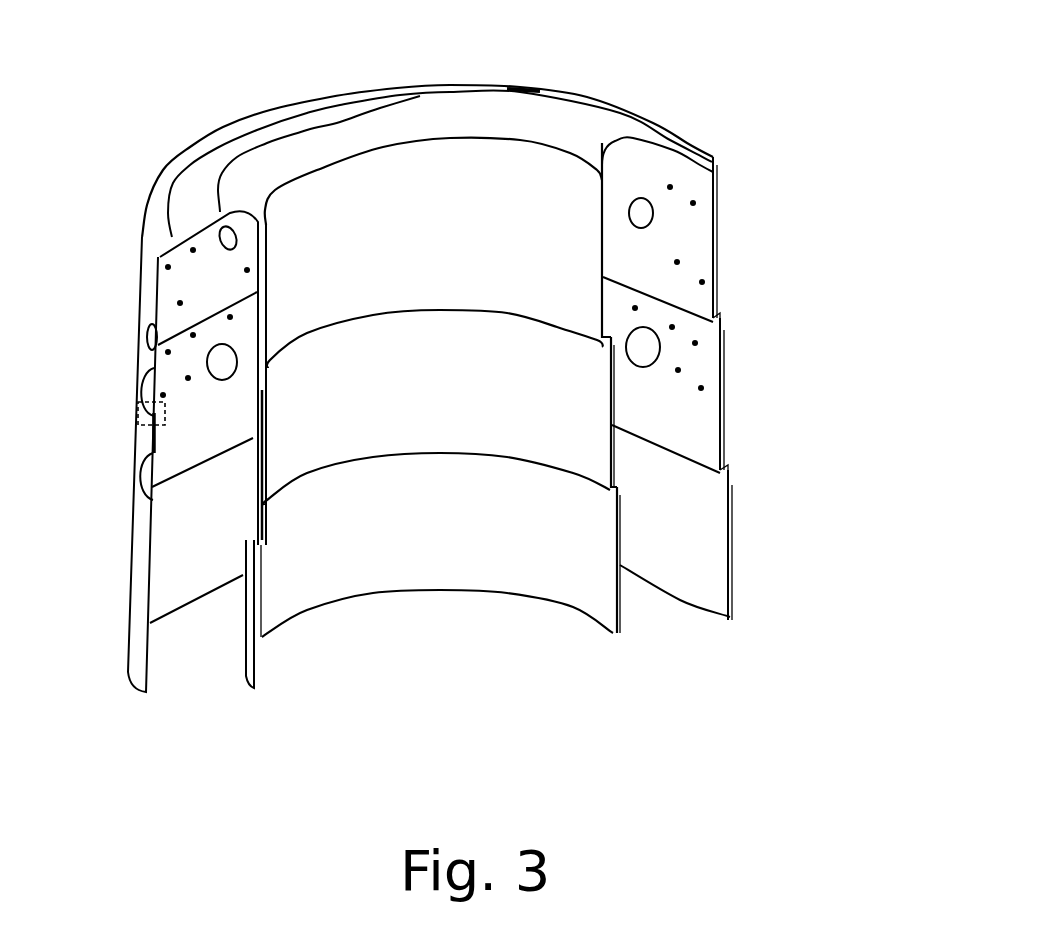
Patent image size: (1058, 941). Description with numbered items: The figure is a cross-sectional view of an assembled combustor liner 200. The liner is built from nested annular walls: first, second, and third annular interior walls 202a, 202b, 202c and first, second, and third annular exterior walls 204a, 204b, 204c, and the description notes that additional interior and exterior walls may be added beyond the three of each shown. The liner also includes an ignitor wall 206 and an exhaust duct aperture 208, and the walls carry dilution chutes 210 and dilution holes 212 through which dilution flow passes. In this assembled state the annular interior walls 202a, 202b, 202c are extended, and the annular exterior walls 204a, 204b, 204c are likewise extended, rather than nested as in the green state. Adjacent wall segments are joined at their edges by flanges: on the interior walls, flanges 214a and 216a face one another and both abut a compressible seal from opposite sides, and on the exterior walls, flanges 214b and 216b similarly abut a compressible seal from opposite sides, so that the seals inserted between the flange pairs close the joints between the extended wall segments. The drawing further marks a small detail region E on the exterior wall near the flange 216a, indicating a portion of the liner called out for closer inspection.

The combustor liner 200 is at (475, 359).
The first annular interior wall 202a is at (463, 259).
The second annular interior wall 202b is at (463, 407).
The third annular interior wall 202c is at (463, 542).
The first annular exterior wall 204a is at (241, 290).
The second annular exterior wall 204b is at (243, 431).
The third annular exterior wall 204c is at (233, 559).
The ignitor wall 206 is at (357, 125).
The exhaust duct aperture 208 is at (435, 606).
The dilution chutes 210 is at (650, 213).
The dilution holes 212 is at (700, 278).
The flange 214a is at (258, 388).
The flange 214b is at (722, 357).
The flange 216a is at (263, 397).
The flange 216b is at (720, 317).
The detail region E is at (143, 427).